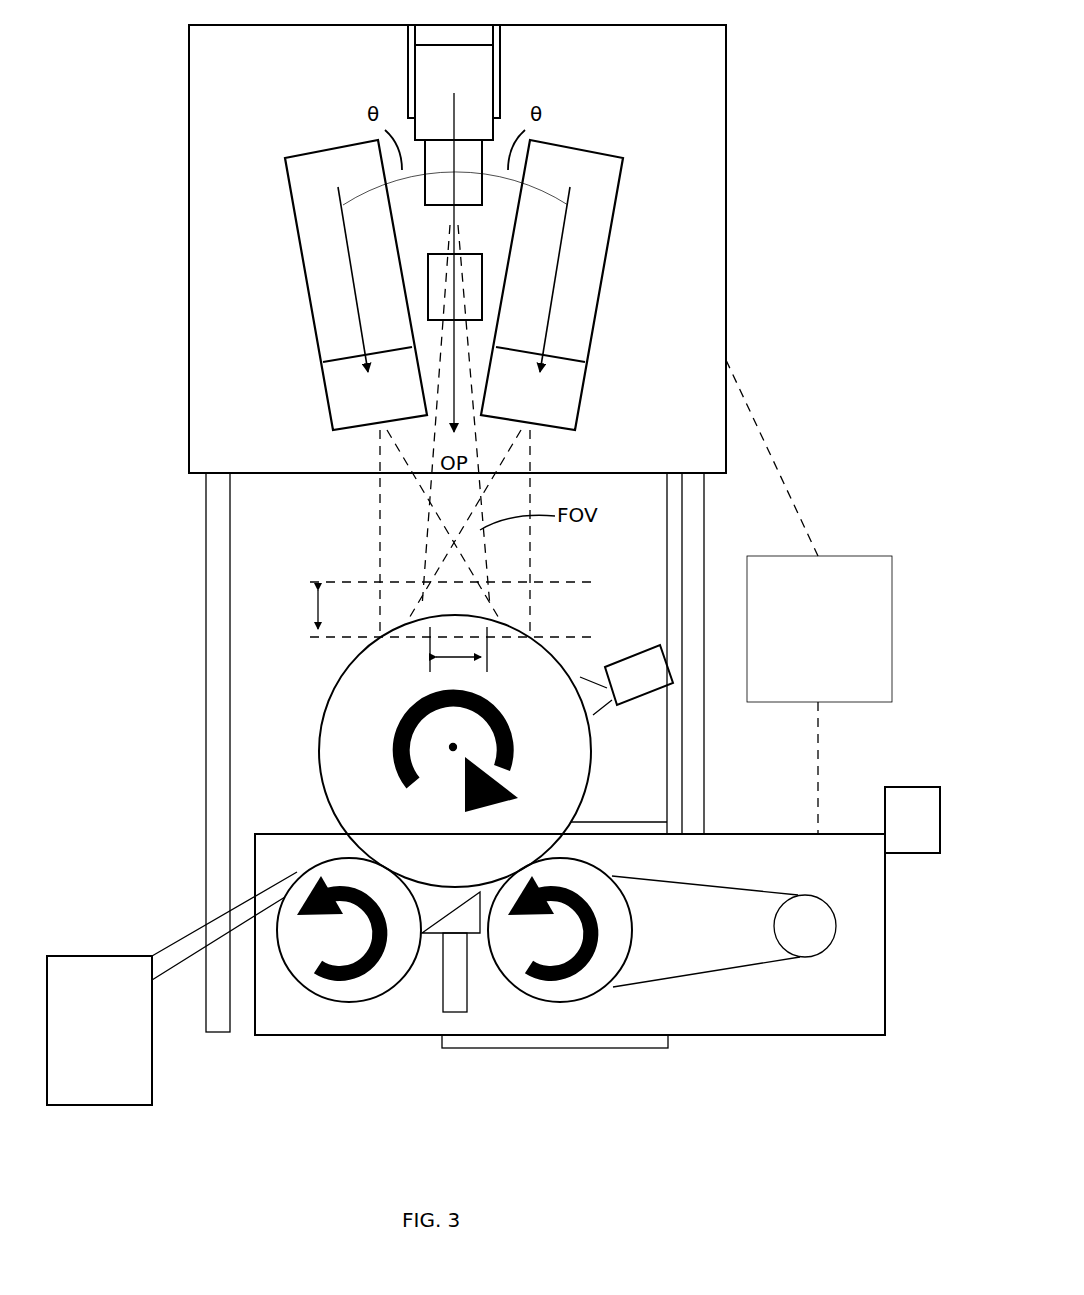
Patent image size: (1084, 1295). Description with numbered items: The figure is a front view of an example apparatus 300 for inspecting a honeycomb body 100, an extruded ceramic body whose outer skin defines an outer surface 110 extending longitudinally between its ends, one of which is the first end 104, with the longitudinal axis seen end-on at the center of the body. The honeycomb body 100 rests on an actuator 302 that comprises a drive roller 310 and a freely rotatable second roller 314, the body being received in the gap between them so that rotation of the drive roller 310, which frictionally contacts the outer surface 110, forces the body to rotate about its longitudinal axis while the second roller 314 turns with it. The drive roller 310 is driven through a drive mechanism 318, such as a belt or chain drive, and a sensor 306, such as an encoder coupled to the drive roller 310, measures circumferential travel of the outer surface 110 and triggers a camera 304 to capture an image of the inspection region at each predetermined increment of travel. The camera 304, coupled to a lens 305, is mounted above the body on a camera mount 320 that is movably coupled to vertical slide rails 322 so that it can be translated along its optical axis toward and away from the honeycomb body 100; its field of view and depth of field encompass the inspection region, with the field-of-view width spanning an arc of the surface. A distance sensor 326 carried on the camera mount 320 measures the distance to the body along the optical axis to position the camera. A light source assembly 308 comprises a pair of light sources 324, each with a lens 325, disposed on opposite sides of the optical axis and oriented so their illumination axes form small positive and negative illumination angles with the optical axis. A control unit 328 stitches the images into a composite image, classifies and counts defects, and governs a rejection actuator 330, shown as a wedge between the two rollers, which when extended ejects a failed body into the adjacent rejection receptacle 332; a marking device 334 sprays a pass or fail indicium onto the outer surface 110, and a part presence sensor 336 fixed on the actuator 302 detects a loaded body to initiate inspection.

The apparatus 300 is at (140, 84).
The actuator 302 is at (775, 1017).
The camera 304 is at (472, 78).
The lens 305 is at (399, 135).
The sensor 306 is at (540, 1042).
The light source assembly 308 is at (688, 247).
The drive roller 310 is at (583, 993).
The second roller 314 is at (322, 990).
The drive mechanism 318 is at (720, 912).
The camera mount 320 is at (700, 315).
The slide rail 322 is at (215, 552).
The light source 324 is at (312, 228).
The lens 325 is at (337, 397).
The distance sensor 326 is at (478, 270).
The control unit 328 is at (809, 597).
The rejection actuator 330 is at (448, 980).
The rejection receptacle 332 is at (172, 988).
The marking device 334 is at (635, 668).
The part presence sensor 336 is at (905, 807).
The honeycomb body 100 is at (369, 612).
The first end 104 is at (455, 751).
The outer surface 110 is at (338, 737).